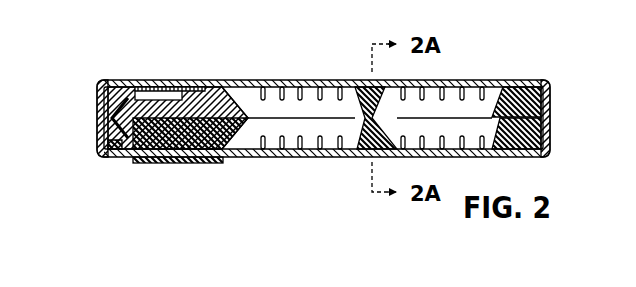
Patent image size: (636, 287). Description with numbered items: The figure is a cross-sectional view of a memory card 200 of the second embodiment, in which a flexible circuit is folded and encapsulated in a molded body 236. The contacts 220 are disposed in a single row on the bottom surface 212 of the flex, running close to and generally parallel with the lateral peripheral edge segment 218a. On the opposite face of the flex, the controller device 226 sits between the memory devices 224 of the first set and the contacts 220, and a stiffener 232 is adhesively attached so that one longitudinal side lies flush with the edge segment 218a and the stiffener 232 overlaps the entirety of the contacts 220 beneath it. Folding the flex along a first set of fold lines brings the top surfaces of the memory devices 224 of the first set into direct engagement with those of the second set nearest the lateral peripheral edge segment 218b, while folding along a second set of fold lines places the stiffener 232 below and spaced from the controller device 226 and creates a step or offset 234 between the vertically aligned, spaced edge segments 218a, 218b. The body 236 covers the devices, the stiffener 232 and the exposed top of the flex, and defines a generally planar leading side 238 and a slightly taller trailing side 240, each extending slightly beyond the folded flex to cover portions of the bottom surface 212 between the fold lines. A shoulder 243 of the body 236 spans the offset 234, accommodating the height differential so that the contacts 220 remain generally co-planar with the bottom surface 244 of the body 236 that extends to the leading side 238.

The memory card 200 is at (511, 47).
The bottom surface 212 is at (330, 157).
The lateral peripheral edge segment 218a is at (249, 157).
The lateral peripheral edge segment 218b is at (209, 158).
The contacts 220 is at (143, 156).
The memory devices 224 is at (312, 127).
The controller device 226 is at (167, 95).
The stiffener 232 is at (98, 94).
The offset 234 is at (196, 157).
The body 236 is at (213, 121).
The leading side 238 is at (100, 117).
The trailing side 240 is at (552, 152).
The shoulder 243 is at (207, 157).
The bottom surface 244 is at (100, 143).